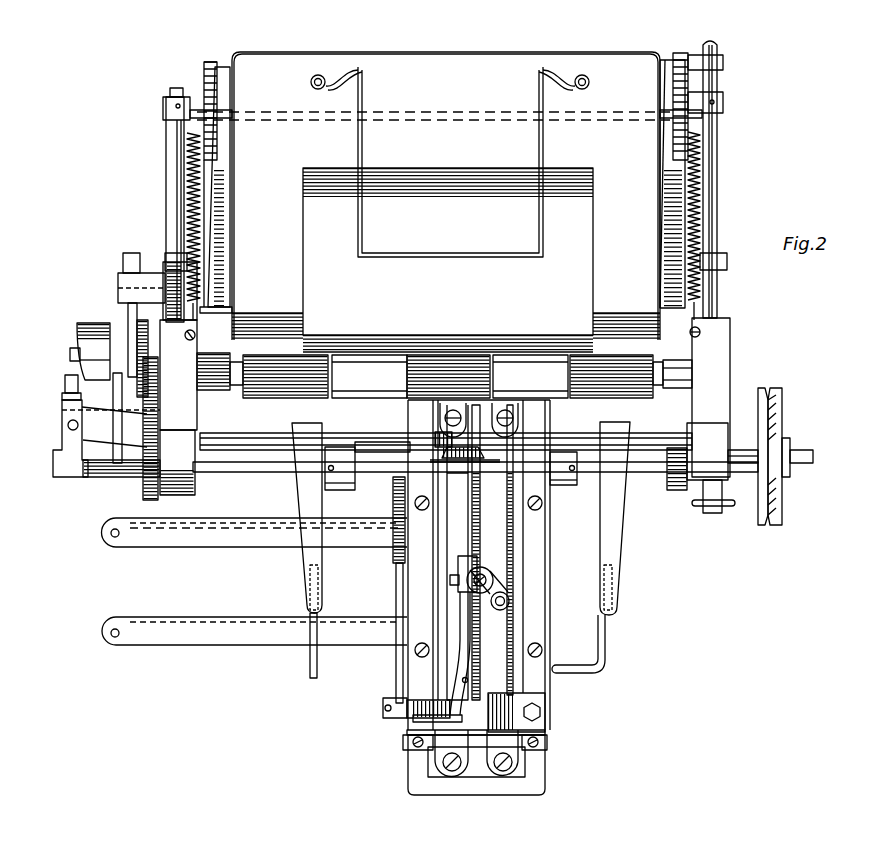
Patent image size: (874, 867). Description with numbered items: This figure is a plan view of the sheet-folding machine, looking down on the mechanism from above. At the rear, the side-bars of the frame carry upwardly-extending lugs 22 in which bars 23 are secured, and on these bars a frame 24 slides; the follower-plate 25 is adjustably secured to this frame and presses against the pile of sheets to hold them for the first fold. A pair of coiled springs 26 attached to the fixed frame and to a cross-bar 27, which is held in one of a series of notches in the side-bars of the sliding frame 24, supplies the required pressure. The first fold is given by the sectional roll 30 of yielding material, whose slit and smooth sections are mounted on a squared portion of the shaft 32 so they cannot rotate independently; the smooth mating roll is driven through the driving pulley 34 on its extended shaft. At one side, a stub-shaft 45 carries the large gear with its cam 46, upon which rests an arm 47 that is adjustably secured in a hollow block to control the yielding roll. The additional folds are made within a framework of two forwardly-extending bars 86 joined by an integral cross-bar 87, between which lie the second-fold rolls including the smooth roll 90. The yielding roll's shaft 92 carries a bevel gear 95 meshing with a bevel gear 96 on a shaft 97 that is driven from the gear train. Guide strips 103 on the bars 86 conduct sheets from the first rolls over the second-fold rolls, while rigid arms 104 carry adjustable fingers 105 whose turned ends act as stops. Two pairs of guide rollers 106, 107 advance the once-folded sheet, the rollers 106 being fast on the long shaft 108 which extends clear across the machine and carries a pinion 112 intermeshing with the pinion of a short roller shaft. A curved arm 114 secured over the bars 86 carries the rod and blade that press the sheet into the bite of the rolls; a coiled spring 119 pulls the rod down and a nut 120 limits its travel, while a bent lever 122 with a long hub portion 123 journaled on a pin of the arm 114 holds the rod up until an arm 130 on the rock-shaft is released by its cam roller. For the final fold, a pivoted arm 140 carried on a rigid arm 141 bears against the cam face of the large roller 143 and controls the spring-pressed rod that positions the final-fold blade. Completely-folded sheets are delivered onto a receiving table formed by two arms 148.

The lug 22 is at (163, 104).
The bar 23 is at (177, 190).
The sliding frame 24 is at (205, 74).
The follower-plate 25 is at (643, 72).
The coiled spring 26 is at (187, 176).
The cross-bar 27 is at (660, 118).
The sectional roll 30 is at (640, 386).
The shaft 32 is at (240, 384).
The driving pulley 34 is at (773, 410).
The stub-shaft 45 is at (70, 354).
The cam 46 is at (138, 345).
The arm 47 is at (130, 320).
The forwardly-extending bar 86 is at (415, 759).
The cross-bar 87 is at (482, 791).
The folding roll 90 is at (512, 570).
The shaft 92 is at (478, 440).
The bevel gear 95 is at (470, 460).
The bevel gear 96 is at (444, 448).
The shaft 97 is at (358, 443).
The guide strip 103 is at (407, 555).
The rigid arm 104 is at (304, 556).
The adjustable finger 105 is at (309, 661).
The guide roller 106 is at (343, 447).
The guide roller 107 is at (338, 486).
The shaft 108 is at (265, 473).
The pinion 112 is at (675, 477).
The curved arm 114 is at (480, 640).
The coiled spring 119 is at (509, 600).
The nut 120 is at (488, 566).
The bent lever 122 is at (396, 661).
The hub portion 123 is at (415, 712).
The arm 130 is at (72, 406).
The pivoted arm 140 is at (62, 445).
The rigid arm 141 is at (105, 424).
The large roller 143 is at (85, 325).
The arm 148 is at (188, 541).